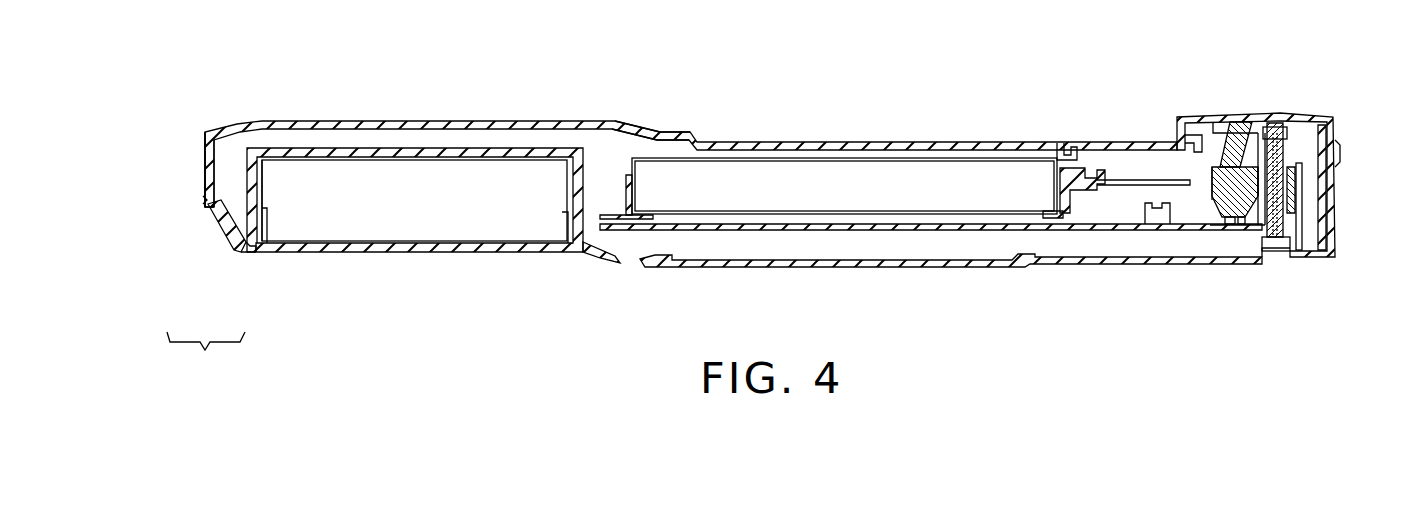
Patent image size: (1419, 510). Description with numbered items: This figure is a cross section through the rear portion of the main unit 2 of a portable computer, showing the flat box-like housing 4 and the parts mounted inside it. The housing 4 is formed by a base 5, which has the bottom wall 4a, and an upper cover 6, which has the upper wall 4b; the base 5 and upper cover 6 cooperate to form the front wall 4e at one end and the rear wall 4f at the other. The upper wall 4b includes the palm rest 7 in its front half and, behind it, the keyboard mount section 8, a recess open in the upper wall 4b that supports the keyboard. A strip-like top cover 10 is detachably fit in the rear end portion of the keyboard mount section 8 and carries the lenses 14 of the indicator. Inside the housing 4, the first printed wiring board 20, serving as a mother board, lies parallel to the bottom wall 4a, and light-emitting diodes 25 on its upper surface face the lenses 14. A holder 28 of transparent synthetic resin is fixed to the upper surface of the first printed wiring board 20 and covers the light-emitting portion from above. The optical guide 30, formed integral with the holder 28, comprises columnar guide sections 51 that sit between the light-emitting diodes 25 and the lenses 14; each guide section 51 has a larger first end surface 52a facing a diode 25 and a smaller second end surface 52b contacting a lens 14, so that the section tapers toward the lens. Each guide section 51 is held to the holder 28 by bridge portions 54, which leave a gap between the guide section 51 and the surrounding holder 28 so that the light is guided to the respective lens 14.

The main unit 2 is at (318, 267).
The housing 4 is at (206, 260).
The bottom wall 4a is at (1073, 266).
The upper wall 4b is at (640, 120).
The front wall 4e is at (201, 162).
The rear wall 4f is at (1328, 178).
The base 5 is at (238, 255).
The upper cover 6 is at (203, 205).
The palm rest 7 is at (397, 120).
The keyboard mount section 8 is at (922, 142).
The top cover 10 is at (1180, 118).
The lens 14 is at (1229, 121).
The first printed wiring board 20 is at (806, 231).
The light-emitting diode 25 is at (1231, 226).
The holder 28 is at (1105, 168).
The optical guide 30 is at (1262, 140).
The guide section 51 is at (1250, 152).
The first end surface 52a is at (1218, 225).
The second end surface 52b is at (1238, 125).
The bridge portion 54 is at (1212, 177).